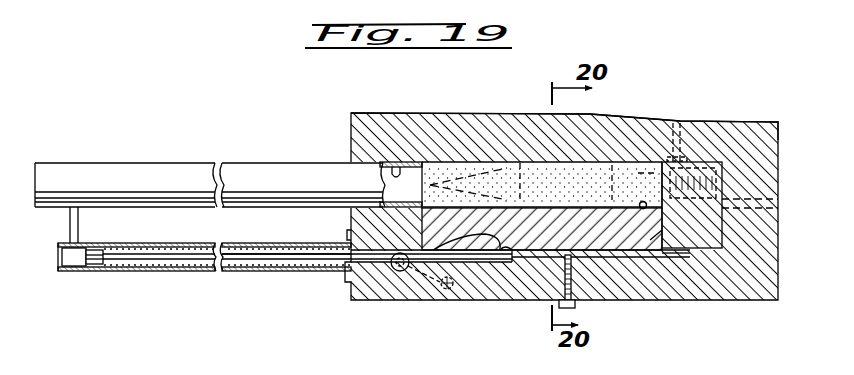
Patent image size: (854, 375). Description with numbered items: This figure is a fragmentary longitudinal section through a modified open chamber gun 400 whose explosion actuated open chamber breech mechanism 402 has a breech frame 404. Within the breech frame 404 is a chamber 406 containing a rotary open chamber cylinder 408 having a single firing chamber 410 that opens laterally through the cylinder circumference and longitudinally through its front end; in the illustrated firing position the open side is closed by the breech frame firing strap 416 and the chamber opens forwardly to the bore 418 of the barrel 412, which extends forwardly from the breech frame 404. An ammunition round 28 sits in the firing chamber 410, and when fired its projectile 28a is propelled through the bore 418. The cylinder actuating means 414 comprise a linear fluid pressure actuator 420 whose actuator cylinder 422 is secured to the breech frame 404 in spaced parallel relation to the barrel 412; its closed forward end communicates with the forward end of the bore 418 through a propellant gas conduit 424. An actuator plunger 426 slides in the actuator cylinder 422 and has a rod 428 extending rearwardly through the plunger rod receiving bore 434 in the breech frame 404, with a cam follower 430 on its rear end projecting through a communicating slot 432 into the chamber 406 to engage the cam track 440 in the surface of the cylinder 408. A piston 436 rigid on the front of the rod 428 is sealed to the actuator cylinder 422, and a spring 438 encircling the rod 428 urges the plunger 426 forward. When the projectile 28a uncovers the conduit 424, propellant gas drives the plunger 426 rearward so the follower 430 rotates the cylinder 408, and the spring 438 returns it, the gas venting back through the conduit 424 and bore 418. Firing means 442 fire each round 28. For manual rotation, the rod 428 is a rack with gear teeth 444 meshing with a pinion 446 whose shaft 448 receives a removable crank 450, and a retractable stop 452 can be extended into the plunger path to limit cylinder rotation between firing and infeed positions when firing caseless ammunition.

The ammunition round 28 is at (476, 168).
The projectile 28a is at (507, 200).
The open chamber gun 400 is at (781, 104).
The open chamber breech mechanism 402 is at (786, 134).
The breech frame 404 is at (770, 166).
The chamber 406 is at (423, 212).
The rotary open chamber cylinder 408 is at (697, 233).
The firing chamber 410 is at (657, 216).
The barrel 412 is at (158, 170).
The cylinder actuating means 414 is at (228, 274).
The breech frame firing strap 416 is at (378, 113).
The bore 418 is at (397, 168).
The linear fluid pressure actuator 420 is at (197, 274).
The actuator cylinder 422 is at (73, 268).
The propellant gas conduit 424 is at (79, 226).
The actuator plunger 426 is at (287, 272).
The rod 428 is at (515, 260).
The cam follower 430 is at (349, 232).
The communicating slot 432 is at (643, 212).
The plunger rod receiving bore 434 is at (688, 258).
The piston 436 is at (97, 265).
The spring 438 is at (183, 252).
The cam track 440 is at (612, 157).
The firing means 442 is at (704, 152).
The gear teeth 444 is at (474, 262).
The pinion 446 is at (391, 270).
The shaft 448 is at (398, 272).
The crank 450 is at (441, 290).
The retractable stop 452 is at (575, 292).